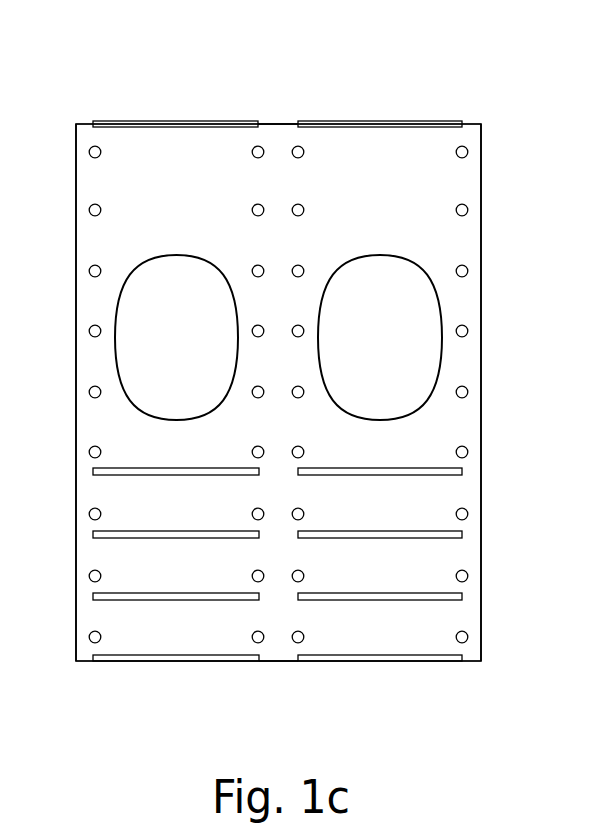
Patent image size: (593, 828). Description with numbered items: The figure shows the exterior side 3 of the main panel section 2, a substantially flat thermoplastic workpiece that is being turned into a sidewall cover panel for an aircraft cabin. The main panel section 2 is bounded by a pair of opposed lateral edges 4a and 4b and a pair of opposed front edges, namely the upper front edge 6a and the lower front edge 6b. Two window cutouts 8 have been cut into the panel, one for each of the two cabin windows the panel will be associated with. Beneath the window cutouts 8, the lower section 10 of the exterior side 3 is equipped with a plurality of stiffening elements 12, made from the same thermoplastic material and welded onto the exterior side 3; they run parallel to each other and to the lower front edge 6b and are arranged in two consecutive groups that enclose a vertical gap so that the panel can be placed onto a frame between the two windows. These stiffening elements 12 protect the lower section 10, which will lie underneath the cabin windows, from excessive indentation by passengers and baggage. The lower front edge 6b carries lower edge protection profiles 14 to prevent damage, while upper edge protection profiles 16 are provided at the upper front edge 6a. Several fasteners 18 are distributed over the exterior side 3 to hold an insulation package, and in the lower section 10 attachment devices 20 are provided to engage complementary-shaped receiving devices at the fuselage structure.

The main panel section 2 is at (470, 198).
The exterior side 3 is at (431, 145).
The lateral edge 4a is at (482, 293).
The lateral edge 4b is at (75, 390).
The upper front edge 6a is at (275, 123).
The lower front edge 6b is at (278, 662).
The window cutout 8 is at (118, 308).
The lower section 10 is at (335, 508).
The stiffening element 12 is at (335, 477).
The lower edge protection profile 14 is at (176, 659).
The upper edge protection profile 16 is at (182, 122).
The fastener 18 is at (89, 210).
The attachment device 20 is at (92, 643).